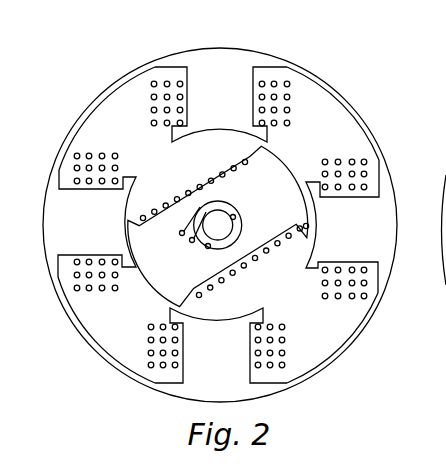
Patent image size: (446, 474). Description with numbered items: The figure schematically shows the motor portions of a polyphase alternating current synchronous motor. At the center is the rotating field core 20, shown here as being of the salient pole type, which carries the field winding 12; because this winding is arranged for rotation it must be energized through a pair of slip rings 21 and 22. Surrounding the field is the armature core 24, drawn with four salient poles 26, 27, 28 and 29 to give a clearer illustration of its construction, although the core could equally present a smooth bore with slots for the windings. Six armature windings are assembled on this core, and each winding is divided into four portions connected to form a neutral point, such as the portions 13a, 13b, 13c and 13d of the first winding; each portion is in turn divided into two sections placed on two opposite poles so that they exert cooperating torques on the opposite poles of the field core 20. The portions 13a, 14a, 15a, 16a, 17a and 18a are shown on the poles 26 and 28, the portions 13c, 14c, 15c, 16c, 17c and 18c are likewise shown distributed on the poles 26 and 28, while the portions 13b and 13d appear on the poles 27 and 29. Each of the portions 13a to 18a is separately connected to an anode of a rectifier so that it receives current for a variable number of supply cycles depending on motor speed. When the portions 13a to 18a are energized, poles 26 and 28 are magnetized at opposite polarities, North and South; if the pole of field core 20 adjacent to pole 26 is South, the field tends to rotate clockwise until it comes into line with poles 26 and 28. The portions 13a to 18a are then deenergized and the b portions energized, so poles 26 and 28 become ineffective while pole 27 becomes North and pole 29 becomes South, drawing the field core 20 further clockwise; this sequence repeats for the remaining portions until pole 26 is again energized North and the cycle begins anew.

The field winding 12 is at (243, 268).
The portion of armature winding 13a is at (76, 259).
The portion of armature winding 13b is at (262, 81).
The portion of armature winding 13c is at (102, 259).
The portion of armature winding 13d is at (263, 107).
The portion of armature winding 14a is at (74, 276).
The portion of armature winding 14c is at (105, 278).
The portion of armature winding 15a is at (74, 290).
The portion of armature winding 15c is at (102, 291).
The portion of armature winding 16a is at (89, 184).
The portion of armature winding 16c is at (115, 184).
The portion of armature winding 17a is at (75, 166).
The portion of armature winding 17c is at (118, 167).
The portion of armature winding 18a is at (90, 153).
The portion of armature winding 18c is at (117, 154).
The field core 20 is at (304, 229).
The slip ring 21 is at (236, 217).
The slip ring 22 is at (241, 233).
The armature core 24 is at (345, 108).
The salient pole 26 is at (356, 231).
The salient pole 27 is at (207, 362).
The salient pole 28 is at (68, 225).
The salient pole 29 is at (208, 104).